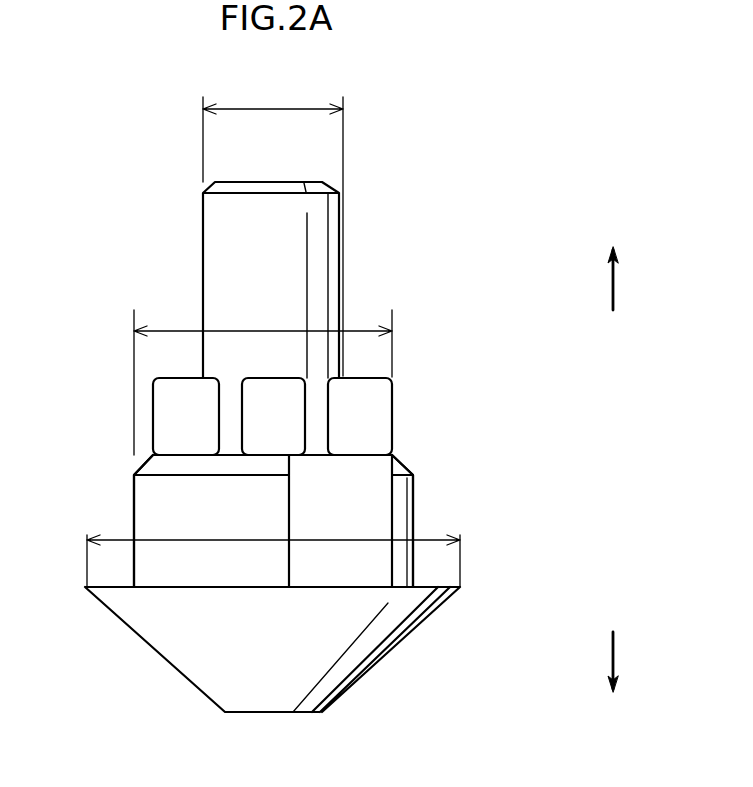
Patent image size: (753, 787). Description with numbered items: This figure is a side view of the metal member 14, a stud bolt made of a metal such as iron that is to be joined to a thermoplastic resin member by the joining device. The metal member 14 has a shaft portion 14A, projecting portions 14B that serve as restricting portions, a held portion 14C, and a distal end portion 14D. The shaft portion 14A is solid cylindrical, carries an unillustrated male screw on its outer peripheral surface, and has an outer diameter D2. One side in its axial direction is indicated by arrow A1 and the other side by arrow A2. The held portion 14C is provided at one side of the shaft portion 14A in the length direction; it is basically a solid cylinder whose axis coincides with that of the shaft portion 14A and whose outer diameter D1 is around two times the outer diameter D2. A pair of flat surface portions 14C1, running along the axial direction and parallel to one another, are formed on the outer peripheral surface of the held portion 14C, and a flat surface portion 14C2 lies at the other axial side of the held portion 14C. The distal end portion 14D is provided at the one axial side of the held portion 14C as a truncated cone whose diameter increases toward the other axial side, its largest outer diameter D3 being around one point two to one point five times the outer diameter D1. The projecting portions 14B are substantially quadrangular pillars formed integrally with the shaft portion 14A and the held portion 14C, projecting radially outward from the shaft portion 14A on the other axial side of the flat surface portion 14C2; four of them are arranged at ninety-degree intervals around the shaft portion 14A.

The metal member 14 is at (301, 433).
The shaft portion 14A is at (318, 255).
The projecting portions 14B is at (163, 433).
The held portion 14C is at (346, 517).
The flat surface portions 14C1 is at (375, 470).
The flat surface portion 14C2 is at (198, 447).
The distal end portion 14D is at (185, 650).
The outer diameter of the held portion D1 is at (245, 330).
The outer diameter of the shaft portion D2 is at (263, 108).
The outer diameter of the distal end portion D3 is at (320, 540).
The arrow indicating one side in the axial direction A1 is at (617, 660).
The arrow indicating another side in the axial direction A2 is at (617, 278).